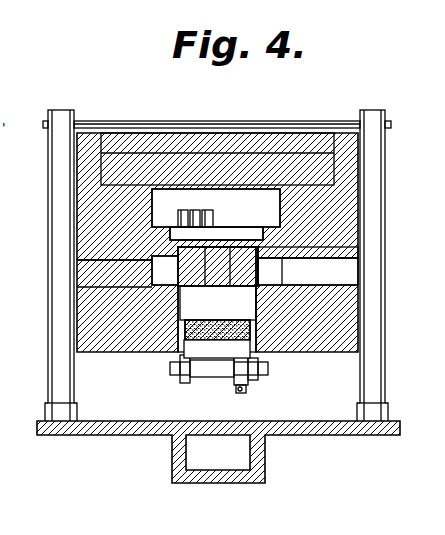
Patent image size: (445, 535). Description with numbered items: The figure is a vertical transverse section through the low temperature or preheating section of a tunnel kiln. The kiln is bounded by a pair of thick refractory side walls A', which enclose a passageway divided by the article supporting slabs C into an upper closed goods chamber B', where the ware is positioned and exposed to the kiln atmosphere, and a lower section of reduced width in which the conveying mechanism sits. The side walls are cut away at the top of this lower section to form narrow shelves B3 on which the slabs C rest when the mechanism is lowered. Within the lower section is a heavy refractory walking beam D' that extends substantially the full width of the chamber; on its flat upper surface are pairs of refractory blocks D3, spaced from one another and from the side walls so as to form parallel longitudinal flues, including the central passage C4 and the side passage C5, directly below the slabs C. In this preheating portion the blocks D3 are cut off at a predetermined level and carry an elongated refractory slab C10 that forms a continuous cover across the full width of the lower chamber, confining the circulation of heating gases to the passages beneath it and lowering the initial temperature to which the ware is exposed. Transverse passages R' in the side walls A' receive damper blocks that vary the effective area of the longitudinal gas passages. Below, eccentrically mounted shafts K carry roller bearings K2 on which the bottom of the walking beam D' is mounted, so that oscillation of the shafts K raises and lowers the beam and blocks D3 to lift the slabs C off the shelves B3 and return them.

The upper closed goods chamber B' is at (217, 152).
The elongated refractory slab C10 is at (184, 240).
The refractory blocks D3 is at (212, 258).
The refractory slabs C is at (258, 232).
The transverse passages R' is at (85, 252).
The flue or passage C5 is at (10, 262).
The shelves B3 is at (390, 243).
The flue or passage C4 is at (220, 269).
The side walls A' is at (225, 265).
The walking beam section D' is at (217, 262).
The roller bearings K2 is at (185, 380).
The shafts K is at (222, 362).